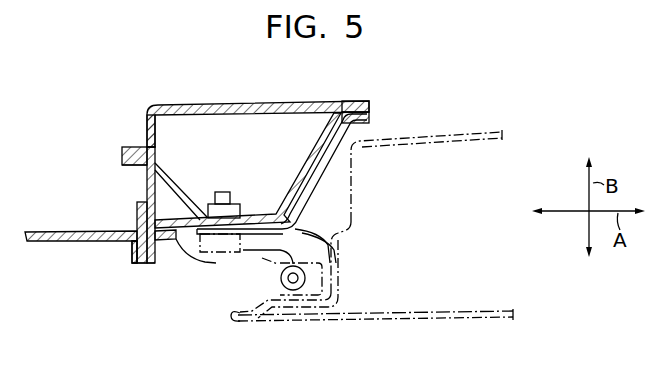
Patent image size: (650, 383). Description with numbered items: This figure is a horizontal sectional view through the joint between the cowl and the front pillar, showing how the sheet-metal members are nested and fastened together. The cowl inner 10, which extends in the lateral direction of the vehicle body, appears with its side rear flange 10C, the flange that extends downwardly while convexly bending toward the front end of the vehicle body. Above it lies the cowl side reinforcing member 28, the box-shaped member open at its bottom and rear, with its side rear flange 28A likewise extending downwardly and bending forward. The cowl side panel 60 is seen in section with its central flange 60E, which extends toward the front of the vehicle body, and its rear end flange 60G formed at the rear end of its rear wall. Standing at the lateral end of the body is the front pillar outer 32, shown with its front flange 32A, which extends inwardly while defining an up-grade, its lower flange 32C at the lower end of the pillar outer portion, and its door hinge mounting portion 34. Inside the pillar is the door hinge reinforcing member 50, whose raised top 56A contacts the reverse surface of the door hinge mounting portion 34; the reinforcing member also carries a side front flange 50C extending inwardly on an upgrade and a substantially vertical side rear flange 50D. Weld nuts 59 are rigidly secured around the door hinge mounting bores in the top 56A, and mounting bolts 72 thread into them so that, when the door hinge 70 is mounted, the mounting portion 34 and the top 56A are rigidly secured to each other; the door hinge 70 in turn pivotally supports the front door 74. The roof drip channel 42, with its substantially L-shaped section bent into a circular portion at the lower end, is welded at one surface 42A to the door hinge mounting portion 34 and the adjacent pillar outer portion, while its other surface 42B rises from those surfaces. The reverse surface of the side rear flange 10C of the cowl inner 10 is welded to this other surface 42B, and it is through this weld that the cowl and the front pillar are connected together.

The cowl inner 10 is at (136, 215).
The side rear flange 10C is at (143, 266).
The cowl side reinforcing member 28 is at (60, 246).
The side rear flange 28A is at (130, 257).
The front pillar outer 32 is at (334, 181).
The front flange 32A is at (122, 166).
The lower flange 32C is at (370, 138).
The door hinge mounting portion 34 is at (334, 244).
The roof drip channel 42 is at (231, 315).
The one surface of roof drip channel 42A is at (166, 248).
The other surface of roof drip channel 42B is at (158, 266).
The door hinge reinforcing member 50 is at (163, 164).
The side front flange 50C is at (122, 153).
The side rear flange 50D is at (372, 113).
The top of side portion 56A is at (277, 212).
The weld nuts 59 is at (257, 200).
The cowl side panel 60 is at (205, 101).
The central flange 60E is at (140, 147).
The rear end flange 60G is at (356, 104).
The door hinge 70 is at (334, 296).
The mounting bolts 72 is at (326, 262).
The front door 74 is at (400, 318).